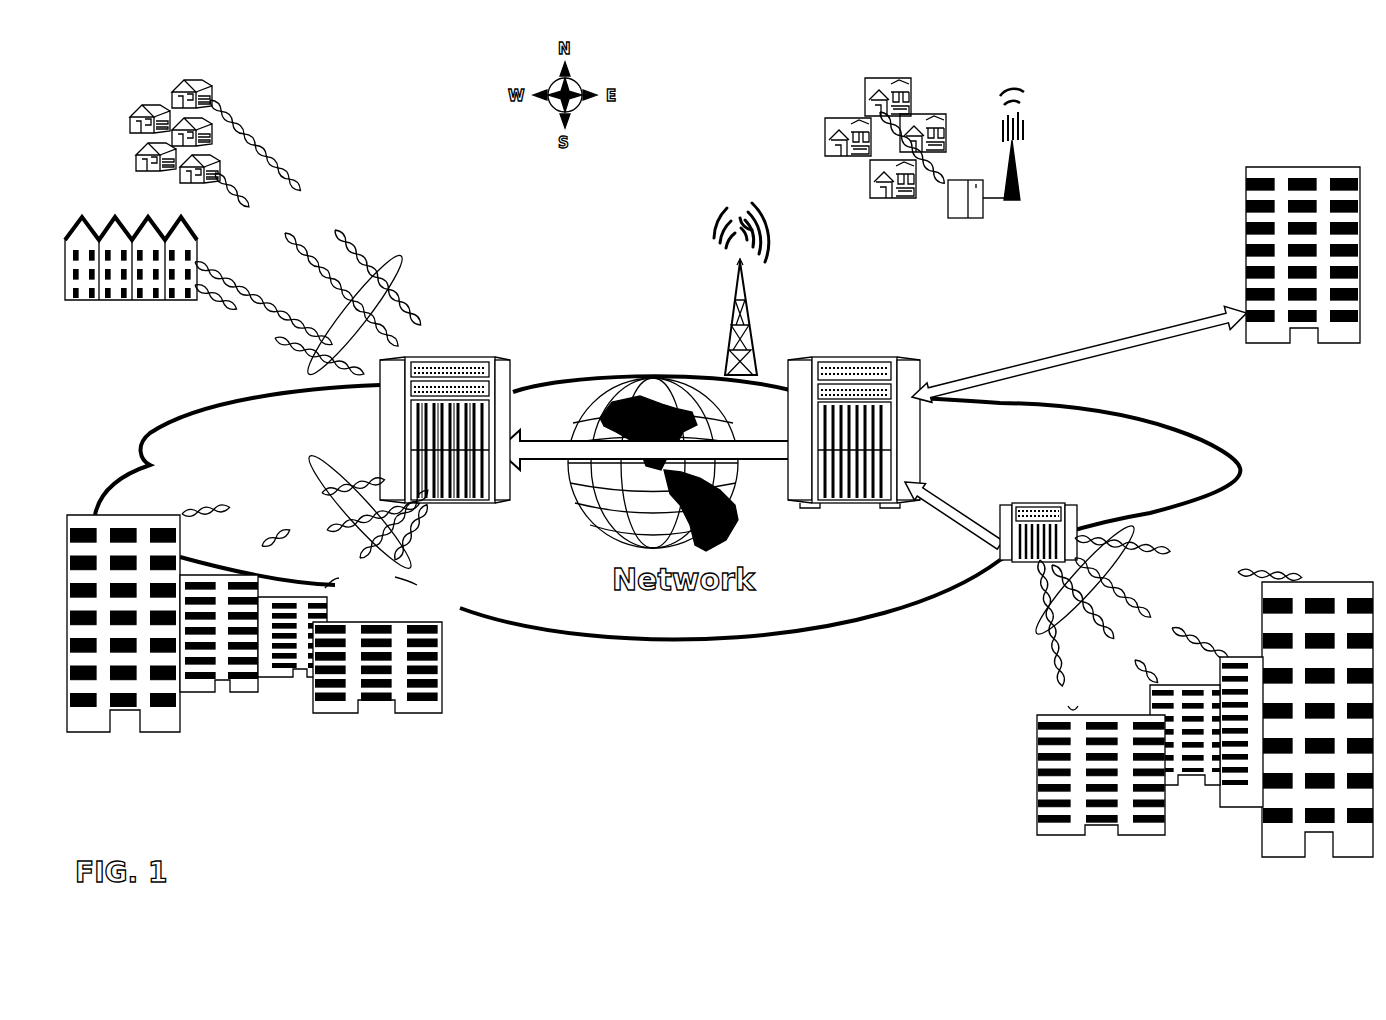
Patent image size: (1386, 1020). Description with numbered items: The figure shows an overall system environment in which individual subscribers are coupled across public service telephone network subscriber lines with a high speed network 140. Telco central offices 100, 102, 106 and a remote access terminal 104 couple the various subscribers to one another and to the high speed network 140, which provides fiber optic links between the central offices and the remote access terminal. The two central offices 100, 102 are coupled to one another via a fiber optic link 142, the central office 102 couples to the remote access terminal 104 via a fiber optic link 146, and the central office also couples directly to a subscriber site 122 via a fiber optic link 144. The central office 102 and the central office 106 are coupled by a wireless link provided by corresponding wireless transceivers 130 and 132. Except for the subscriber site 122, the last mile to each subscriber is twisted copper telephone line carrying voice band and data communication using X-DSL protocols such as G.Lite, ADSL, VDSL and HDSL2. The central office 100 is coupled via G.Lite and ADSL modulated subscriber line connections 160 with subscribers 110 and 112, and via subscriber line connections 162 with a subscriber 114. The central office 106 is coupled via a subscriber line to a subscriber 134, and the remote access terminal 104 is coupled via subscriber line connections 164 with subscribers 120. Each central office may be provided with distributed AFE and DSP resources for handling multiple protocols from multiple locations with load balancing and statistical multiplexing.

The telco central office 100 is at (470, 355).
The telco central office 102 is at (865, 358).
The remote access terminal 104 is at (1050, 505).
The telco central office 106 is at (983, 220).
The subscribers 110 is at (215, 100).
The subscriber 112 is at (120, 226).
The subscriber 114 is at (350, 712).
The subscribers 120 is at (1045, 765).
The subscriber site 122 is at (1260, 245).
The wireless transceiver 130 is at (745, 276).
The wireless transceiver 132 is at (1020, 168).
The subscriber 134 is at (880, 178).
The high speed network 140 is at (620, 640).
The fiber optic link 142 is at (540, 455).
The fiber optic link 144 is at (1148, 345).
The fiber optic link 146 is at (955, 515).
The subscriber line connections 160 is at (398, 270).
The subscriber line connections 162 is at (322, 462).
The subscriber line connections 164 is at (1060, 615).